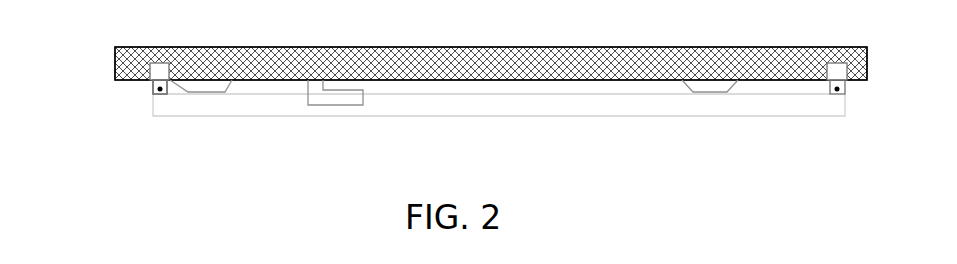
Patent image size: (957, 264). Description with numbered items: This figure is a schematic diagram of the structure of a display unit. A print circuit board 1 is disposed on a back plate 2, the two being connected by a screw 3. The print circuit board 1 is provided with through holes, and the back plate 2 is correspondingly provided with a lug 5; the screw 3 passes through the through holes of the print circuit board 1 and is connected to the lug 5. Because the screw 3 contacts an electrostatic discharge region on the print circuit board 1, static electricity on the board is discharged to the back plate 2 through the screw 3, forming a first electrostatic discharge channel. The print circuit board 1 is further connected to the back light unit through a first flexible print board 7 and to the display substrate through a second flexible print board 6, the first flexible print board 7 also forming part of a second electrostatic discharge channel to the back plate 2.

The print circuit board 1 is at (162, 115).
The back plate 2 is at (116, 62).
The screw 3 is at (163, 92).
The lug 5 is at (168, 87).
The second flexible print board 6 is at (217, 85).
The first flexible print board 7 is at (347, 90).